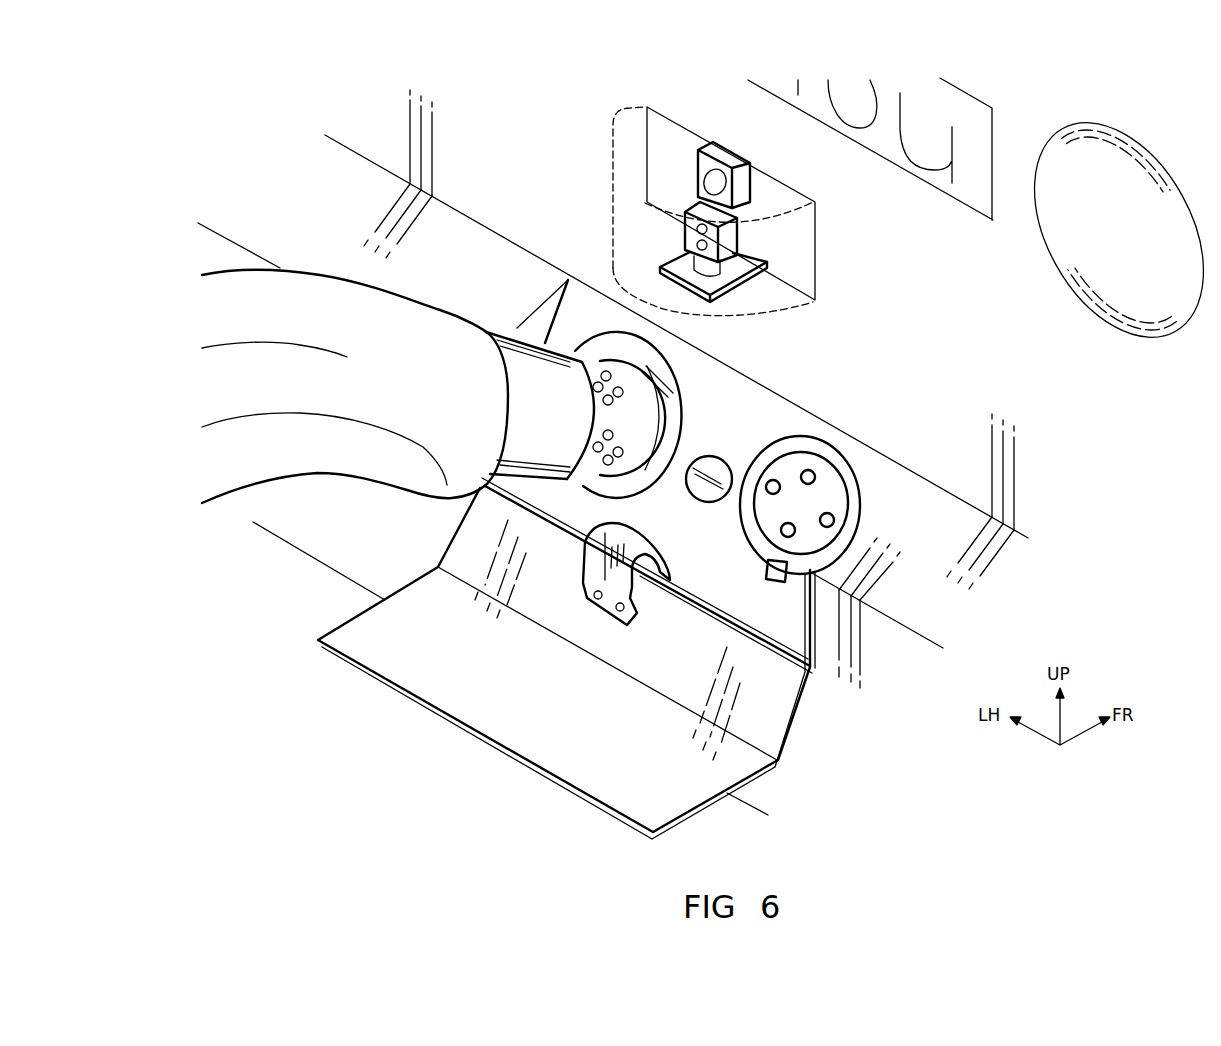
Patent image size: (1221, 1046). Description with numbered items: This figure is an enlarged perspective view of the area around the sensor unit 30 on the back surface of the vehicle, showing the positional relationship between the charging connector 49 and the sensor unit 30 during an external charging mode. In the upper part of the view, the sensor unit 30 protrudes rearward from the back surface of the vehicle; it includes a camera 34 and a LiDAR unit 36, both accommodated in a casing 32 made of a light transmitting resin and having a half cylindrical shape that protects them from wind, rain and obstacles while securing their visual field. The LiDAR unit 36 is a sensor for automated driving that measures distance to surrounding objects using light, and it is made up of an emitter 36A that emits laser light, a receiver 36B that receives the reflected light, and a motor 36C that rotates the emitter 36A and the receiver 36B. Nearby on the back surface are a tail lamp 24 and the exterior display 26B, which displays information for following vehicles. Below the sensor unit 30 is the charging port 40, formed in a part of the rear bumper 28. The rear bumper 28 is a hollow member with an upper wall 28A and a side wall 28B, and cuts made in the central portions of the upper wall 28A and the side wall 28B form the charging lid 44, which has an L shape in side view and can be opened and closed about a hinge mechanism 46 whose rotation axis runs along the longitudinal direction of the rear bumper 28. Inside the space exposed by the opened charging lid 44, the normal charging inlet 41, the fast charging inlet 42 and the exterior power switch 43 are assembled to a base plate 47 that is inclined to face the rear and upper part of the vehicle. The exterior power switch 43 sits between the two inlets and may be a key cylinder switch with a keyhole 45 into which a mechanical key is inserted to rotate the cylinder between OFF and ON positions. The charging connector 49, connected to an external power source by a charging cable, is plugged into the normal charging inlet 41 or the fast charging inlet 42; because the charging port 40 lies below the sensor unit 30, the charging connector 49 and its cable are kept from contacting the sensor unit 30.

The tail lamp 24 is at (1115, 197).
The exterior display 26B is at (993, 165).
The rear bumper 28 is at (460, 232).
The upper wall 28A is at (480, 282).
The side wall 28B is at (323, 542).
The sensor unit 30 is at (806, 235).
The casing 32 is at (625, 123).
The camera 34 is at (722, 158).
The LiDAR unit 36 is at (810, 282).
The emitter 36A is at (743, 271).
The receiver 36B is at (707, 231).
The motor 36C is at (710, 267).
The charging port 40 is at (806, 476).
The normal charging inlet 41 is at (827, 487).
The fast charging inlet 42 is at (650, 418).
The exterior power switch 43 is at (710, 500).
The charging lid 44 is at (388, 643).
The keyhole 45 is at (718, 477).
The hinge mechanism 46 is at (657, 537).
The base plate 47 is at (823, 435).
The charging connector 49 is at (340, 310).